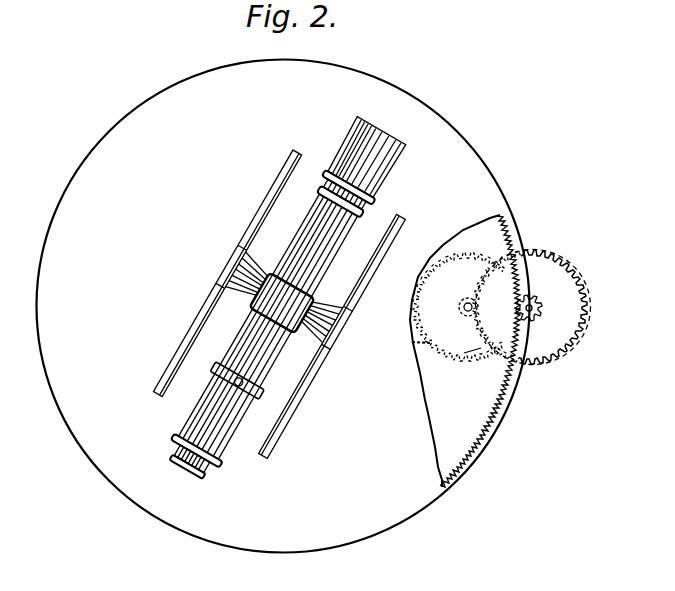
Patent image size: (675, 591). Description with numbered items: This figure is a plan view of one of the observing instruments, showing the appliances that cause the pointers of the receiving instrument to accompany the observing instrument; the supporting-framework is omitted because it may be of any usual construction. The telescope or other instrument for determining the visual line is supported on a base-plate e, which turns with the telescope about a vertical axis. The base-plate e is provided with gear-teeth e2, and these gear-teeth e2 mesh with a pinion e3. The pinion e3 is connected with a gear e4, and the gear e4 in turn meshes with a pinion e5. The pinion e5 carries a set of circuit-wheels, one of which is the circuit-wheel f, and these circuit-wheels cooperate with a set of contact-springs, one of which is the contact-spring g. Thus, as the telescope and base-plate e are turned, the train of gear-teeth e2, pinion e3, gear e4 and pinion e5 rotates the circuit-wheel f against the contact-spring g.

The base-plate e is at (50, 235).
The gear-teeth e2 is at (474, 446).
The pinion e3 is at (533, 316).
The gear e4 is at (556, 346).
The pinion e5 is at (464, 309).
The circuit-wheel f is at (471, 350).
The contact-spring g is at (432, 344).